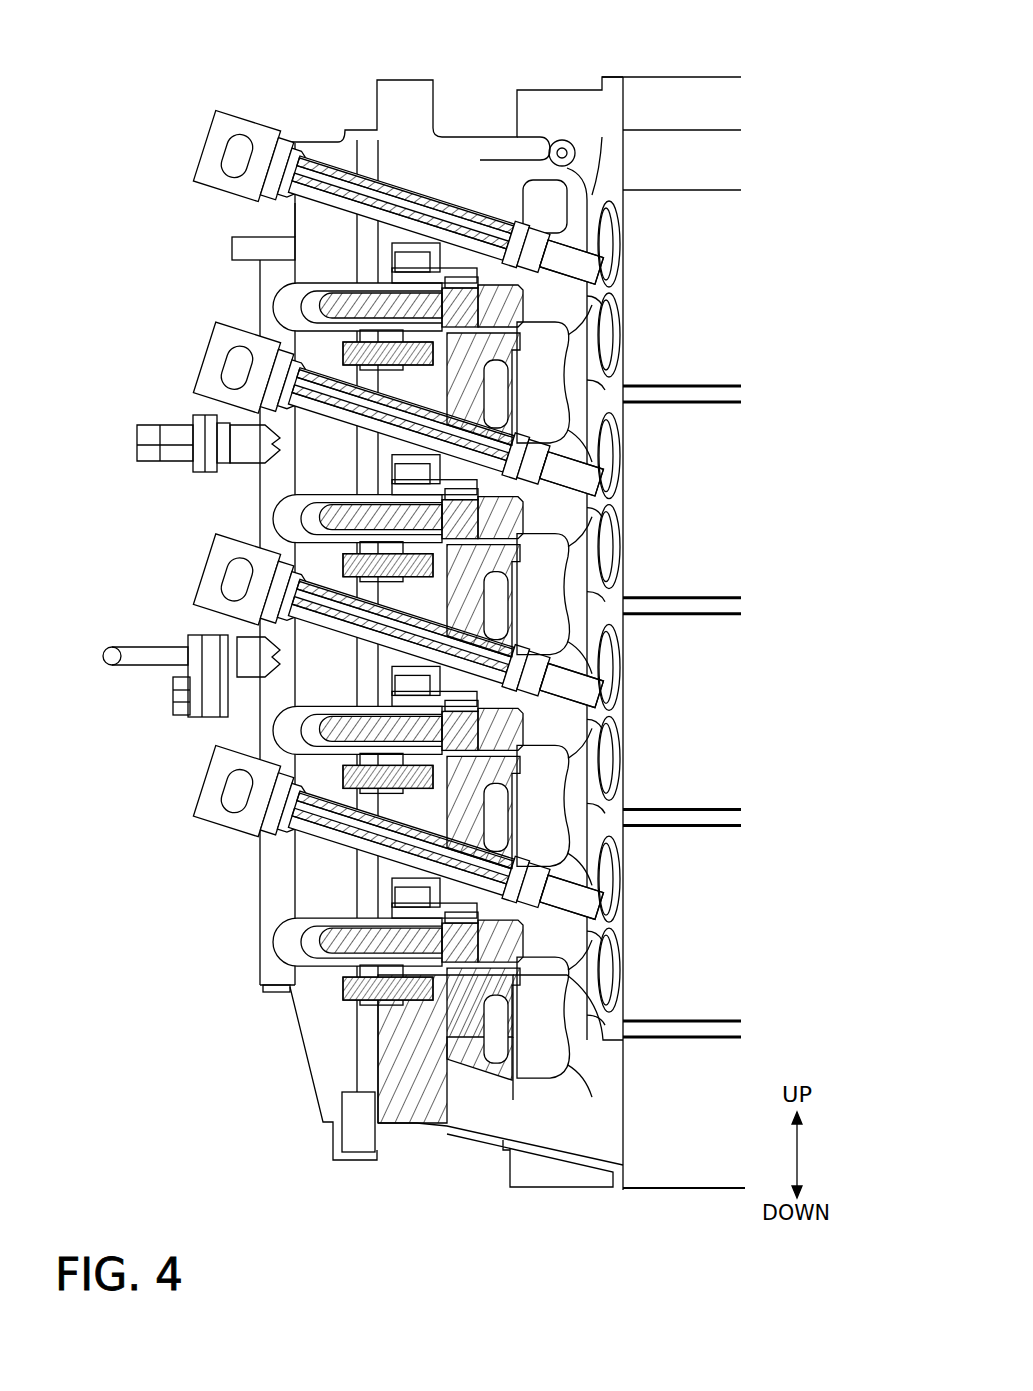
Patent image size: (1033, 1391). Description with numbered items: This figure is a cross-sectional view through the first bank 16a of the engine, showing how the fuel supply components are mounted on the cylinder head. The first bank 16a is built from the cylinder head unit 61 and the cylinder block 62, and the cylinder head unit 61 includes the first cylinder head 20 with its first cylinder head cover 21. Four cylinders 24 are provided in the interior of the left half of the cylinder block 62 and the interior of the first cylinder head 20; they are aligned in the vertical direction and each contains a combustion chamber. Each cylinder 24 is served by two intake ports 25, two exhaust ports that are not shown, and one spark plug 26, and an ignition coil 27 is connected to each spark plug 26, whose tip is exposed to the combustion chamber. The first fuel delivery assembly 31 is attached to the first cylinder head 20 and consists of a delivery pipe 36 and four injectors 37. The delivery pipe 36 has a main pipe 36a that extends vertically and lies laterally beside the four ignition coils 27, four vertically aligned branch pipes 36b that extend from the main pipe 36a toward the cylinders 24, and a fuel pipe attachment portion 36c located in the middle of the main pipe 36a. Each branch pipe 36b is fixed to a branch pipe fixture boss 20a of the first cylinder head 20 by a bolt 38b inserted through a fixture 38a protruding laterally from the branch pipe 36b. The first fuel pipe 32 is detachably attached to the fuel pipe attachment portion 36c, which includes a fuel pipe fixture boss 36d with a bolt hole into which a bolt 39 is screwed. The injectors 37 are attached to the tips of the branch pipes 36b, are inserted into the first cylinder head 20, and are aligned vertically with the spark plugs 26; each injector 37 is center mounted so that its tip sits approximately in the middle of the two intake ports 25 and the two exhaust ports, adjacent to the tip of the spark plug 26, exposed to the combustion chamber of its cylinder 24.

The first bank 16a is at (331, 95).
The first cylinder head 20 is at (445, 1137).
The branch pipe fixture boss 20a is at (622, 327).
The first cylinder head cover 21 is at (300, 1105).
The cylinder 24 is at (699, 386).
The intake port 25 is at (603, 244).
The spark plug 26 is at (620, 274).
The ignition coil 27 is at (205, 112).
The first fuel delivery assembly 31 is at (257, 1020).
The first fuel pipe 32 is at (115, 642).
The delivery pipe 36 is at (268, 985).
The main pipe 36a is at (270, 845).
The branch pipe 36b is at (330, 290).
The fuel pipe attachment portion 36c is at (245, 685).
The fuel pipe fixture boss 36d is at (215, 636).
The injector 37 is at (622, 295).
The fixture 38a is at (300, 302).
The bolt 38b is at (345, 352).
The bolt 39 is at (175, 692).
The cylinder head unit 61 is at (335, 1196).
The cylinder block 62 is at (690, 1193).